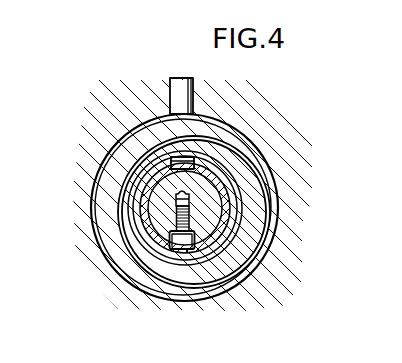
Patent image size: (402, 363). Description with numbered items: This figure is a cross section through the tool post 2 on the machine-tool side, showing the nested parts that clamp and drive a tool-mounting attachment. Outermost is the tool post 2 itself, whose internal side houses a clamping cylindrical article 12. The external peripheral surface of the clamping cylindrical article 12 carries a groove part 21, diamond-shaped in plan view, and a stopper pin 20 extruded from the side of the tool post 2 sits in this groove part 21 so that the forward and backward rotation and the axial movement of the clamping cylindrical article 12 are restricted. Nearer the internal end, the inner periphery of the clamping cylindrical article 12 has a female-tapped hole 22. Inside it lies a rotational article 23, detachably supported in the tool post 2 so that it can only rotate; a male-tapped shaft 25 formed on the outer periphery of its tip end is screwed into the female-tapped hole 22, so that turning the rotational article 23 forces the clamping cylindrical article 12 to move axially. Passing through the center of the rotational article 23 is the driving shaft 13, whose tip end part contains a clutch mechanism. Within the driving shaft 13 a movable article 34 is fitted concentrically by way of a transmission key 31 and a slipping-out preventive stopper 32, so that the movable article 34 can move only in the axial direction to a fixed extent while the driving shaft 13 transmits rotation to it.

The tool post 2 is at (327, 194).
The clamping cylindrical article 12 is at (256, 177).
The driving shaft 13 is at (143, 228).
The stopper pin 20 is at (173, 79).
The groove part 21 is at (132, 128).
The female-tapped hole 22 is at (214, 254).
The male-tapped shaft 25 is at (225, 252).
The rotational article 23 is at (128, 194).
The transmission key 31 is at (192, 150).
The slipping-out preventive stopper 32 is at (187, 240).
The movable article 34 is at (200, 226).